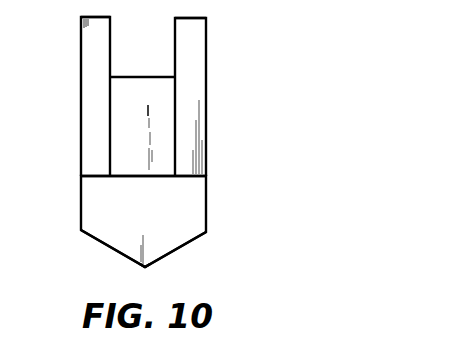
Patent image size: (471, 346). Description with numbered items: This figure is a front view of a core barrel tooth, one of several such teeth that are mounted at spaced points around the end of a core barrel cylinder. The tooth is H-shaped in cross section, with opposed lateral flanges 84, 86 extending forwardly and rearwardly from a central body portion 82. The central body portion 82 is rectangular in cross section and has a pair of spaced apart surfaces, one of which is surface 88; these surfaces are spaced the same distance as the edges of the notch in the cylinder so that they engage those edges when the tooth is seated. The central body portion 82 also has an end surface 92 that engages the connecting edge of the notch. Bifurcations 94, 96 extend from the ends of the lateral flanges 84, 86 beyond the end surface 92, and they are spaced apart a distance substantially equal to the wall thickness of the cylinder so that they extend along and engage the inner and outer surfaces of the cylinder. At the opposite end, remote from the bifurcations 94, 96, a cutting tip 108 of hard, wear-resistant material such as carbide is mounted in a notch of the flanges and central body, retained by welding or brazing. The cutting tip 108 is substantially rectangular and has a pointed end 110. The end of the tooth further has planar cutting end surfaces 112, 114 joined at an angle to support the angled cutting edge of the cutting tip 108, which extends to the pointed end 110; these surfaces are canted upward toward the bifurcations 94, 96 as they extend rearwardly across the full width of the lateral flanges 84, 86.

The central body portion 82 is at (142, 148).
The lateral flange 84 is at (90, 122).
The lateral flange 86 is at (193, 135).
The surface 88 is at (148, 108).
The end surface 92 is at (145, 76).
The bifurcation 94 is at (95, 29).
The bifurcation 96 is at (193, 28).
The cutting tip 108 is at (163, 209).
The pointed end 110 is at (145, 268).
The planar cutting end surface 112 is at (102, 243).
The planar cutting end surface 114 is at (170, 253).